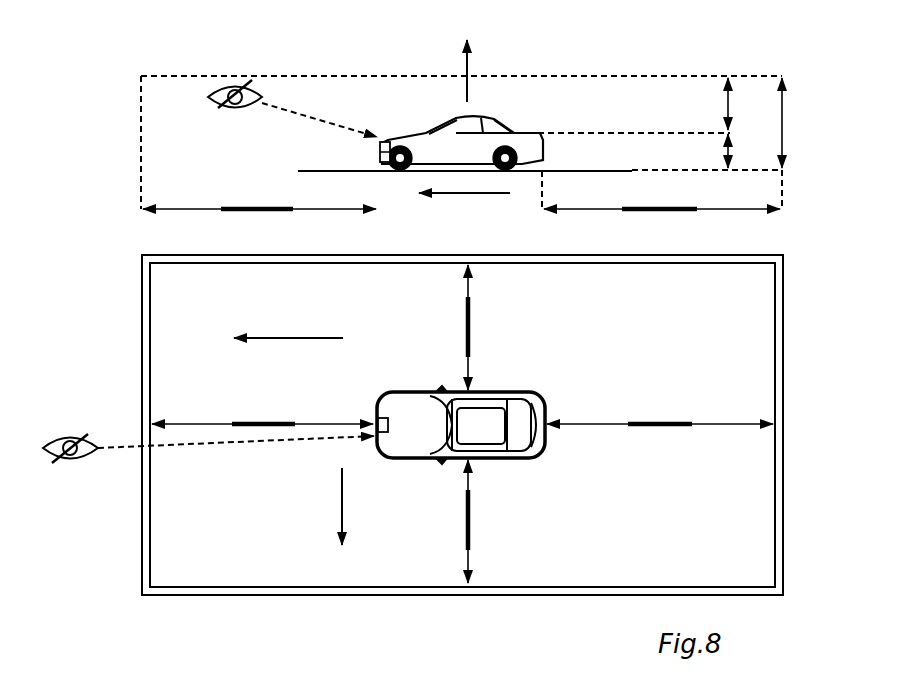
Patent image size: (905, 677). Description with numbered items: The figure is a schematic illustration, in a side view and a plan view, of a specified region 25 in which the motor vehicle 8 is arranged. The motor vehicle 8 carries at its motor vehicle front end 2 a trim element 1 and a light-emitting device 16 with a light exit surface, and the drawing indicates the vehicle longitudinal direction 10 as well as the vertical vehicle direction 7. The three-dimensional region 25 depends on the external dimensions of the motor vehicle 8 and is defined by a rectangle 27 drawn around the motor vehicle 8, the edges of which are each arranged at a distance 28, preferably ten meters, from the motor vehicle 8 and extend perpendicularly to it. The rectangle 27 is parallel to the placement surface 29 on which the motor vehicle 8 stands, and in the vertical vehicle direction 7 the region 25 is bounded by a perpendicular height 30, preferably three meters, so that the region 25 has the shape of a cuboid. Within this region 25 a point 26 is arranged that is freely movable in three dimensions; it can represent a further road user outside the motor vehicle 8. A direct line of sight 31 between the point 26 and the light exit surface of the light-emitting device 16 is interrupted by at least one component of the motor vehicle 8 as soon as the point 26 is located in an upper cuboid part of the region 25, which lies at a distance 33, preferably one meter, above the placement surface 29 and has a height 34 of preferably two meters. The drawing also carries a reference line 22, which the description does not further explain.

The trim element 1 is at (376, 141).
The motor vehicle front end 2 is at (377, 155).
The vertical vehicle direction 7 is at (468, 66).
The motor vehicle 8 is at (510, 125).
The vehicle longitudinal direction 10 is at (467, 196).
The light-emitting device 16 is at (388, 140).
The boundary line of detection region 22 is at (583, 75).
The specified region 25 is at (703, 100).
The point 26 is at (238, 92).
The rectangle 27 is at (784, 370).
The distance 28 is at (250, 206).
The placement surface 29 is at (585, 166).
The height 30 is at (784, 125).
The direct line of sight 31 is at (305, 118).
The distance 33 is at (729, 150).
The height 34 is at (730, 105).